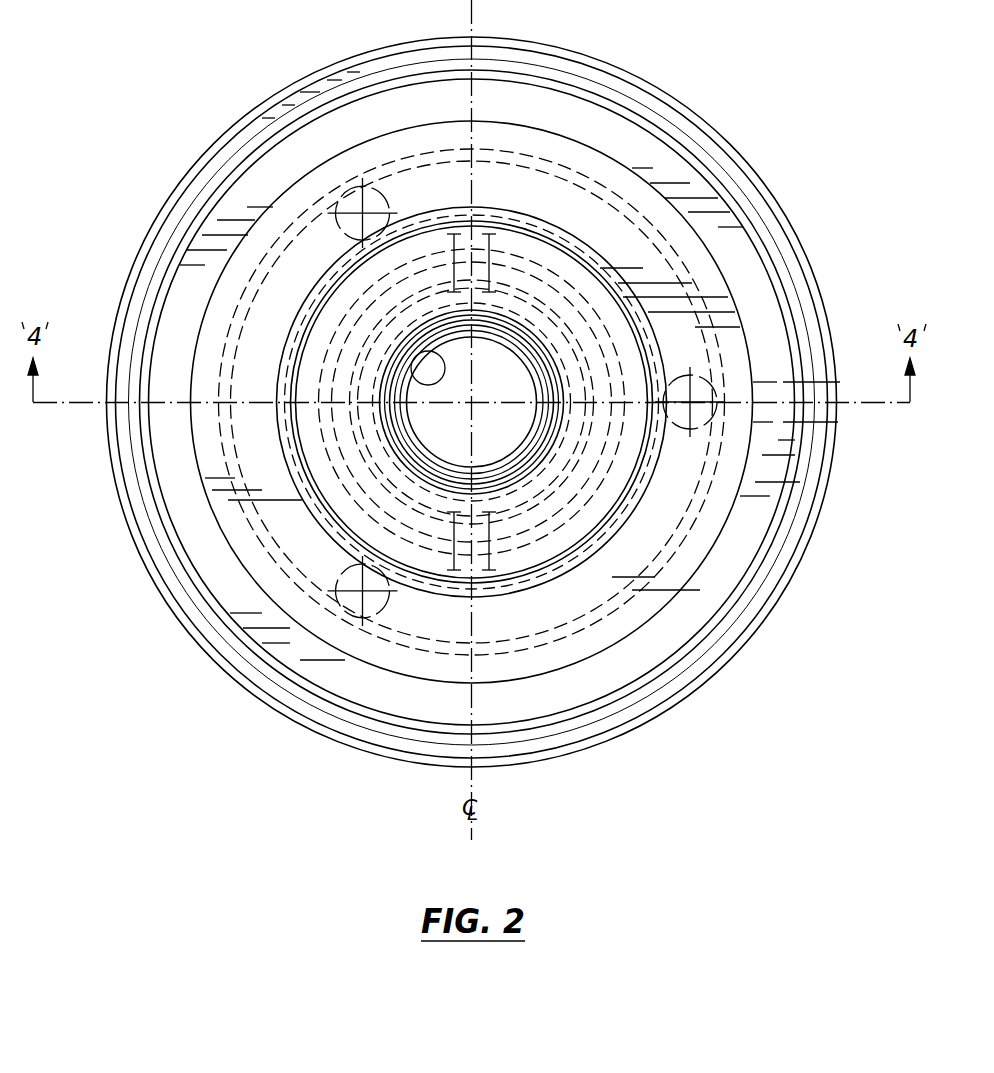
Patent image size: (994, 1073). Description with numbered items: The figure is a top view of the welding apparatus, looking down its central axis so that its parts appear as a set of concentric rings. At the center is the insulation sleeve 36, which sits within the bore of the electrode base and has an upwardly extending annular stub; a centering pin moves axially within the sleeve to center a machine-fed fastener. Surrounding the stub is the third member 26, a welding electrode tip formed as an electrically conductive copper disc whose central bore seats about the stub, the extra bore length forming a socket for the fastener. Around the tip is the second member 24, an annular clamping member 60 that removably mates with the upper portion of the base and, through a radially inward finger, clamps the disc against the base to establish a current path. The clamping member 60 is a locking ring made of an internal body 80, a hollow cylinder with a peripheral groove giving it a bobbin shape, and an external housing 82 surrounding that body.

The second member 24 is at (182, 626).
The third member 26 is at (347, 360).
The insulation sleeve 36 is at (425, 385).
The annular clamping member 60 is at (178, 310).
The body 80 is at (257, 267).
The external housing 82 is at (205, 657).